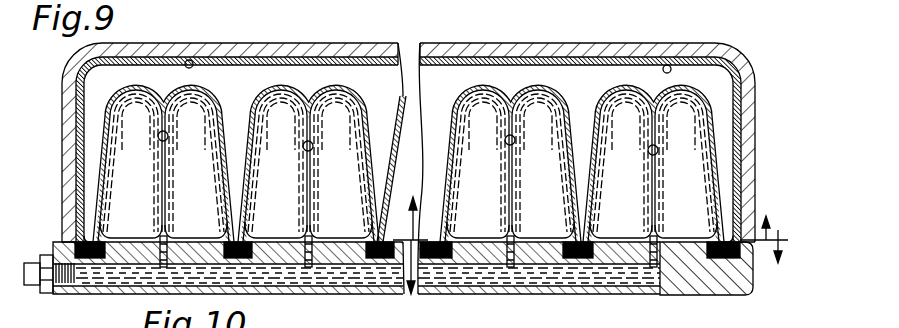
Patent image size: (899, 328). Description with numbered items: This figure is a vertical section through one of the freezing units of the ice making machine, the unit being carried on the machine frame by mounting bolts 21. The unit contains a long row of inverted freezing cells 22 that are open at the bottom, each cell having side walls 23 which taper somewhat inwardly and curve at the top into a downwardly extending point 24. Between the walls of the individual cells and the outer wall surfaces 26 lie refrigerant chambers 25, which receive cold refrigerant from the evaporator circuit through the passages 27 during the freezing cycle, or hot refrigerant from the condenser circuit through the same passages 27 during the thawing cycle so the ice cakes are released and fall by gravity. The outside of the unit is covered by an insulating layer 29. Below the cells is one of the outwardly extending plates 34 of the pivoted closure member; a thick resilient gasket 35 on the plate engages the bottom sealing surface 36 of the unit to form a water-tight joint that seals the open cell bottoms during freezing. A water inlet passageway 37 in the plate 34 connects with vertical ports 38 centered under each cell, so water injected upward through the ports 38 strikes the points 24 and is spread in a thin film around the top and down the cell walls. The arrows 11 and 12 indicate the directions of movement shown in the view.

The upward direction arrow 11 is at (595, 206).
The downward direction arrow 12 is at (598, 277).
The mounting bolt 21 is at (750, 56).
The inverted freezing cell 22 is at (408, 162).
The side wall 23 is at (262, 118).
The downwardly extending point 24 is at (157, 110).
The refrigerant chamber 25 is at (254, 79).
The outer wall surface 26 is at (191, 60).
The passage 27 is at (588, 82).
The insulating layer 29 is at (408, 147).
The outwardly extending plate 34 is at (718, 292).
The resilient gasket 35 is at (228, 242).
The bottom sealing surface 36 is at (62, 210).
The water inlet passageway 37 is at (312, 290).
The vertical port 38 is at (158, 240).